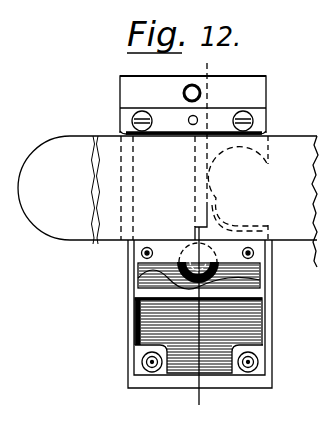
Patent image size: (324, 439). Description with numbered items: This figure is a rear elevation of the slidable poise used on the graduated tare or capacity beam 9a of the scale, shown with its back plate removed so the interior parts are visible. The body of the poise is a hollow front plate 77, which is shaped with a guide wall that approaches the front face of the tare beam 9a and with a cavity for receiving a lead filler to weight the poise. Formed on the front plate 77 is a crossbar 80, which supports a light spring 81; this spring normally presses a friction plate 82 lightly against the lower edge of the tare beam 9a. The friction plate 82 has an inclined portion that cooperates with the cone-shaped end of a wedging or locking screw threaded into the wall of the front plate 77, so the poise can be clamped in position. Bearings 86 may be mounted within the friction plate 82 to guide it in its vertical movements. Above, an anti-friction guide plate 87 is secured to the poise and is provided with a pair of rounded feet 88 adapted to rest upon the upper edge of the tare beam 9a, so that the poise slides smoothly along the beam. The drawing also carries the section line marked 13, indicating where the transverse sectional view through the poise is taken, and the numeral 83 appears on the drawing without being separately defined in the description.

The plate 9a is at (282, 240).
The section line 13- 13 is at (218, 409).
The block 87 is at (323, 108).
The base strip of block 88 is at (267, 130).
The housing 77 is at (270, 327).
The screws 82 is at (142, 247).
The pad 81 is at (134, 282).
The bearing 86 is at (138, 258).
The body 80 is at (150, 292).
The wall 83 is at (138, 318).